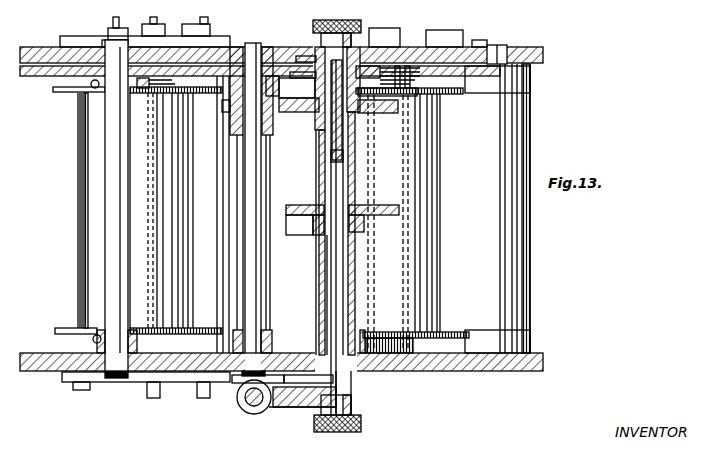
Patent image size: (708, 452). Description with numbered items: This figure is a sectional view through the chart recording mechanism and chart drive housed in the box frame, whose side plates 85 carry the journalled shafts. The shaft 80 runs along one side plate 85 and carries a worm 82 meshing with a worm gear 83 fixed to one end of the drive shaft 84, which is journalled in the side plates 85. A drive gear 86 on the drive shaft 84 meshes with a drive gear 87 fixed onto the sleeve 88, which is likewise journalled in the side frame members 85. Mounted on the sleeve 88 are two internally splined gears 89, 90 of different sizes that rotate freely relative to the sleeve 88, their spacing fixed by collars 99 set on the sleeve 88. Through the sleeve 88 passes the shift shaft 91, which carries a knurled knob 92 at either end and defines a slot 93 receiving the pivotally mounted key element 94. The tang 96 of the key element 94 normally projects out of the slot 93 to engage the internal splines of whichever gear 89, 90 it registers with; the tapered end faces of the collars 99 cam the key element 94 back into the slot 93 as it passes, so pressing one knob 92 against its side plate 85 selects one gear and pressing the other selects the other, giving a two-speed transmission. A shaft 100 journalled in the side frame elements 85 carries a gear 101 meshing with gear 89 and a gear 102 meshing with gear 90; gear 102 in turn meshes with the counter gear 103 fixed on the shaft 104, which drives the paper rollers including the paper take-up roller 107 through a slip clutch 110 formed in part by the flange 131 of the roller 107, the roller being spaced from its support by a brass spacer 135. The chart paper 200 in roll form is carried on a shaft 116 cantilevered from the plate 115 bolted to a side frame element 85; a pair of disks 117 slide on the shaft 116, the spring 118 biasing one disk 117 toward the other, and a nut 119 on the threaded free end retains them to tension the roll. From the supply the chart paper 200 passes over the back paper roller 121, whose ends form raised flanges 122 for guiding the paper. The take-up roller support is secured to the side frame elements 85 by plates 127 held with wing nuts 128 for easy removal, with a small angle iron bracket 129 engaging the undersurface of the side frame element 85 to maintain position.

The shaft 80 is at (254, 405).
The worm 82 is at (240, 383).
The worm gear 83 is at (290, 407).
The drive shaft 84 is at (307, 262).
The side plate 85 is at (540, 48).
The drive gear 86 is at (293, 222).
The drive gear 87 is at (300, 205).
The sleeve 88 is at (355, 277).
The gear 89 is at (295, 113).
The gear 90 is at (298, 80).
The shift shaft 91 is at (350, 384).
The knurled knob 92 is at (313, 22).
The slot 93 is at (334, 160).
The key element 94 is at (345, 148).
The tang 96 is at (360, 116).
The collar 99 is at (302, 62).
The shaft 100 is at (244, 185).
The gear 101 is at (228, 108).
The gear 102 is at (233, 45).
The counter gear 103 is at (168, 66).
The shaft 104 is at (125, 212).
The paper take-up roller 107 is at (85, 192).
The slip clutch 110 is at (158, 93).
The plate 115 is at (478, 40).
The shaft 116 is at (428, 213).
The disk 117 is at (458, 95).
The spring 118 is at (410, 70).
The nut 119 is at (413, 347).
The back paper roller 121 is at (510, 275).
The raised flange 122 is at (532, 80).
The plate 127 is at (113, 383).
The wing nut 128 is at (148, 33).
The angle iron bracket 129 is at (230, 258).
The flange 131 is at (62, 92).
The brass spacer 135 is at (150, 340).
The chart paper 200 is at (80, 252).